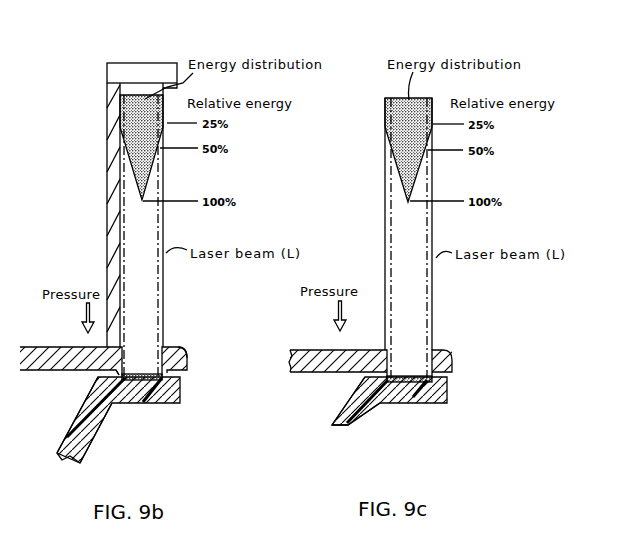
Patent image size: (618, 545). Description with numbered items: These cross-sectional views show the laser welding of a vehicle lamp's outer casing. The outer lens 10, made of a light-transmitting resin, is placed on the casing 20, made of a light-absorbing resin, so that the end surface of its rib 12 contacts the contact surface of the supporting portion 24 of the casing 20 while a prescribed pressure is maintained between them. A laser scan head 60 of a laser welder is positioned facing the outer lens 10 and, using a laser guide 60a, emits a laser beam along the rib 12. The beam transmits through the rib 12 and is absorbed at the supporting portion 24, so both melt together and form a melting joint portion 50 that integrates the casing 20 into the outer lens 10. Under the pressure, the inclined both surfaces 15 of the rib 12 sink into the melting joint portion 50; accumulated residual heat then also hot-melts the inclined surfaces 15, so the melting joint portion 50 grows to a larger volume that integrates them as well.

In FIG. 9b, the outer lens 10 is at (47, 349).
In FIG. 9c, the outer lens 10 is at (312, 352).
In FIG. 9b, the rib 12 is at (149, 372).
In FIG. 9c, the rib 12 is at (418, 373).
In FIG. 9b, the inclined both surfaces 15 is at (177, 355).
In FIG. 9b, the casing 20 is at (90, 438).
In FIG. 9c, the casing 20 is at (366, 427).
In FIG. 9b, the supporting portion 24 is at (177, 394).
In FIG. 9c, the supporting portion 24 is at (448, 393).
In FIG. 9b, the melting joint portion 50 is at (148, 396).
In FIG. 9c, the melting joint portion 50 is at (413, 396).
In FIG. 9b, the laser scan head 60 is at (138, 76).
In FIG. 9b, the laser guide 60a is at (115, 137).